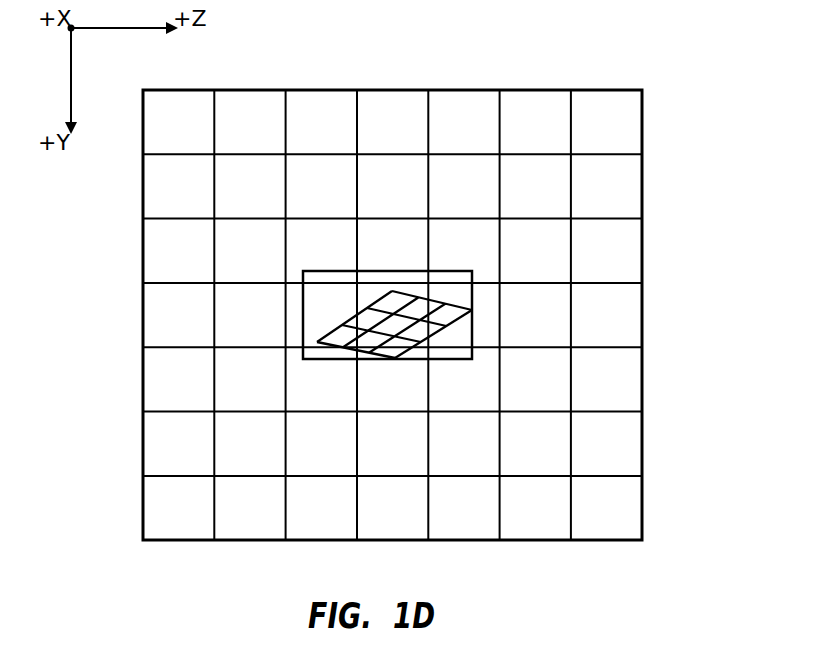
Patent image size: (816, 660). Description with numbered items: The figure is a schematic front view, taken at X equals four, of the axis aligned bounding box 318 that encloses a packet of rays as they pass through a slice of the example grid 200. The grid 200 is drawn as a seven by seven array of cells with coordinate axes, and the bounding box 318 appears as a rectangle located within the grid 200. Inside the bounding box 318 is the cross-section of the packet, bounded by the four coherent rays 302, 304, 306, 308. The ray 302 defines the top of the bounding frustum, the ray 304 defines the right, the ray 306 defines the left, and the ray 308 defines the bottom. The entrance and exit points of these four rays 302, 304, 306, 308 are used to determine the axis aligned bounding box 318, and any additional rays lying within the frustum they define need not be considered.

The grid 200 is at (643, 122).
The ray 302 is at (392, 290).
The ray 304 is at (472, 310).
The ray 306 is at (317, 342).
The ray 308 is at (395, 358).
The axis aligned bounding box 318 is at (473, 352).